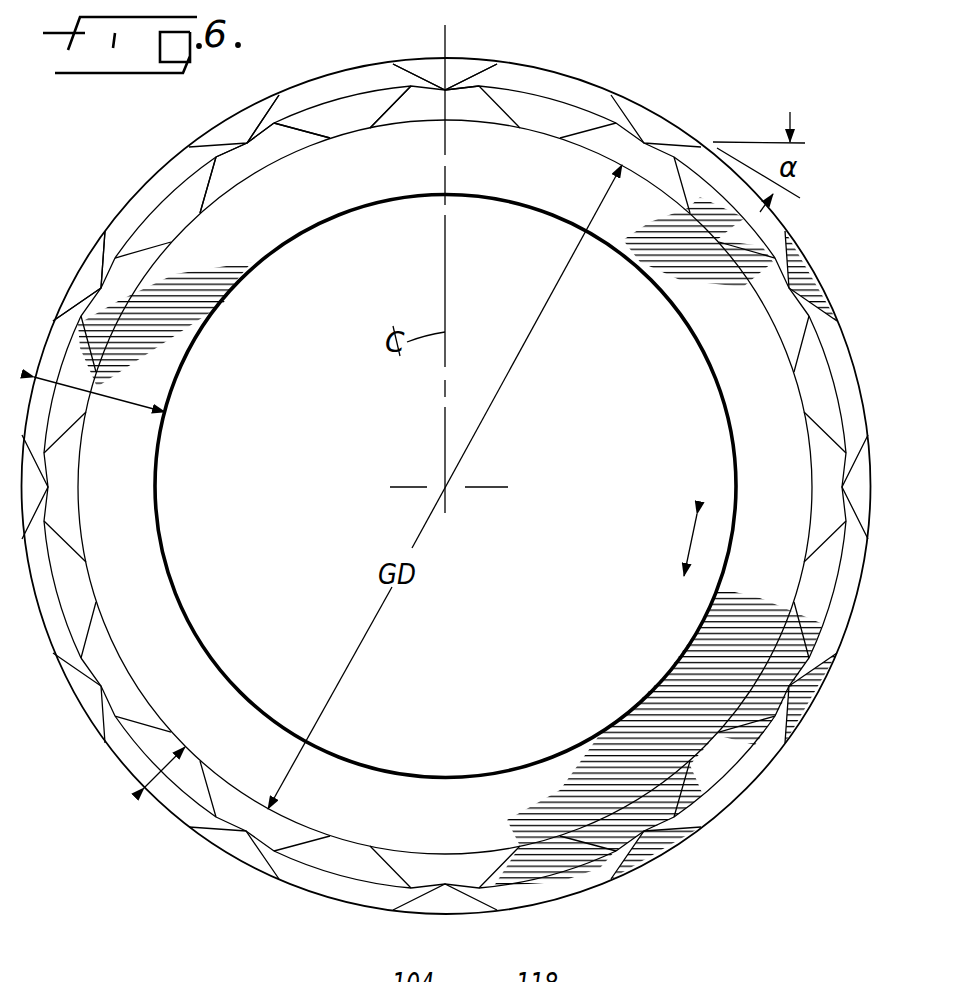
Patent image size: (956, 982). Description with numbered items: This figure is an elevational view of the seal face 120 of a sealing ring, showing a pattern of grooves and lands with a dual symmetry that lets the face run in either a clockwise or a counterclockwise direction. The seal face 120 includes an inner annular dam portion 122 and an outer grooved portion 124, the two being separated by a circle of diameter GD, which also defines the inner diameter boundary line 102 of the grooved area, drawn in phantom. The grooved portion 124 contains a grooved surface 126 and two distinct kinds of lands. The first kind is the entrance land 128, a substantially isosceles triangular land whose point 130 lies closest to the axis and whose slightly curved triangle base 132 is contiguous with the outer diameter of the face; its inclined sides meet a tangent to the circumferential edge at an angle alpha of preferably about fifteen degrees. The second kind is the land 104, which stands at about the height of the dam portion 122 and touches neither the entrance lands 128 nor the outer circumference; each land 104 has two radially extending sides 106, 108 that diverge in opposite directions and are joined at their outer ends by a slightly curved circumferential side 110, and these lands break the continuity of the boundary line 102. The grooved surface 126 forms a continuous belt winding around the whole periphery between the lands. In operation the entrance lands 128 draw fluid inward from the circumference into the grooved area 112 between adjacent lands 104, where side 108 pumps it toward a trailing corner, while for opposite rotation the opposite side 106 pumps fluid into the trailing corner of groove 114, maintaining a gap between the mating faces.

The inner diameter boundary line 102 is at (766, 300).
The land 104 is at (350, 107).
The radially extending side 106 is at (383, 108).
The radially extending side 108 is at (252, 150).
The side 110 is at (303, 107).
The grooved area 112 is at (315, 140).
The groove 114 is at (205, 207).
The seal face 120 is at (112, 392).
The annular dam portion 122 is at (372, 773).
The grooved portion 124 is at (157, 792).
The grooved surface 126 is at (128, 205).
The triangular land surface (entrance land) 128 is at (457, 63).
The point 130 is at (450, 97).
The triangle base 132 is at (437, 57).